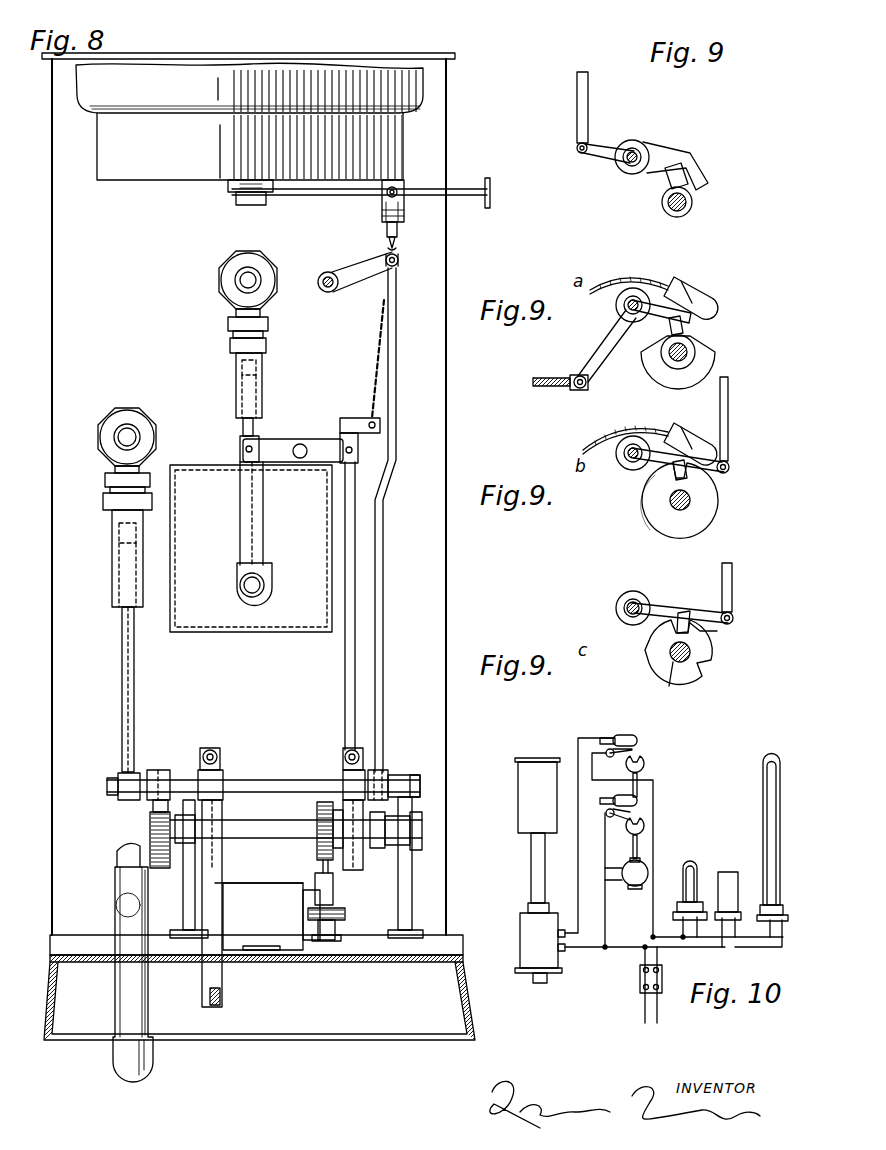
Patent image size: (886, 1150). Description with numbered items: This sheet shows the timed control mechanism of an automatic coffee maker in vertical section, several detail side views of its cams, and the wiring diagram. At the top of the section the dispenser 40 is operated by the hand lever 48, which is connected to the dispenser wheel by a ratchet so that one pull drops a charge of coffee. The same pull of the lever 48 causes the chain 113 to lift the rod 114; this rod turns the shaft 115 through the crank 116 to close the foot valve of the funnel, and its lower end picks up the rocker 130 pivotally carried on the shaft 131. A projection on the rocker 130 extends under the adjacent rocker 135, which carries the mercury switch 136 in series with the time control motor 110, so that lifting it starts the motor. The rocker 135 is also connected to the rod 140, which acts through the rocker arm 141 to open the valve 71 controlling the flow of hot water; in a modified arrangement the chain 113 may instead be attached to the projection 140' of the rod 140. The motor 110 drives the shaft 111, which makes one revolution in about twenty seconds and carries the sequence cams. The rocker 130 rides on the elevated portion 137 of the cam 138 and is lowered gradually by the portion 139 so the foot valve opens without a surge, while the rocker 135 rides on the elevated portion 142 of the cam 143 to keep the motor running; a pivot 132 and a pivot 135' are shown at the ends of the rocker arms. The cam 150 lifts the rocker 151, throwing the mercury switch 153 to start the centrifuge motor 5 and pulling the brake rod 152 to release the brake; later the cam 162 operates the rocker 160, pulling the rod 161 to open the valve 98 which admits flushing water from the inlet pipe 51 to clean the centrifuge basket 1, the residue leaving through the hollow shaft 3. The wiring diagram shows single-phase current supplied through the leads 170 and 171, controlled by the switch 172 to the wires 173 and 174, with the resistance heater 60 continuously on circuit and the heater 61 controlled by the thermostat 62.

In FIG. 10, the centrifuge basket 1 is at (537, 795).
In FIG. 10, the hollow shaft 3 is at (531, 878).
In FIG. 10, the centrifuge motor 5 is at (540, 948).
In FIG. 8, the dispenser 40 is at (80, 100).
In FIG. 8, the hand lever 48 is at (418, 191).
In FIG. 8, the water inlet pipe 51 is at (146, 1011).
In FIG. 10, the resistance heater 60 is at (681, 868).
In FIG. 10, the resistance heater 61 is at (763, 800).
In FIG. 10, the thermostat 62 is at (728, 871).
In FIG. 8, the valve 71 is at (228, 292).
In FIG. 8, the valve 98 is at (128, 408).
In FIG. 8, the time control motor 110 is at (267, 916).
In FIG. 9, the time control motor 110 is at (692, 206).
In FIG. 10, the time control motor 110 is at (632, 888).
In FIG. 9, the shaft 111 is at (672, 206).
In FIG. 9A, the shaft 111 is at (676, 358).
In FIG. 9B, the shaft 111 is at (675, 510).
In FIG. 9C, the shaft 111 is at (680, 685).
In FIG. 8, the chain 113 is at (388, 241).
In FIG. 8, the rod 114 is at (383, 353).
In FIG. 9C, the rod 114 is at (731, 573).
In FIG. 8, the shaft 115 is at (326, 273).
In FIG. 8, the crank 116 is at (355, 290).
In FIG. 8, the rocker 130 is at (380, 778).
In FIG. 9C, the rocker 130 is at (668, 604).
In FIG. 8, the shaft 131 is at (250, 785).
In FIG. 9, the shaft 131 is at (630, 160).
In FIG. 9A, the shaft 131 is at (628, 309).
In FIG. 9B, the shaft 131 is at (630, 466).
In FIG. 9C, the shaft 131 is at (630, 613).
In FIG. 9C, the pivot 132 is at (704, 631).
In FIG. 8, the rocker 135 is at (322, 777).
In FIG. 9B, the rocker 135 is at (709, 466).
In FIG. 10, the pivot 135' is at (660, 805).
In FIG. 8, the mercury switch 136 is at (350, 752).
In FIG. 9B, the mercury switch 136 is at (690, 416).
In FIG. 10, the mercury switch 136 is at (640, 799).
In FIG. 8, the elevated portion 137 is at (385, 811).
In FIG. 9C, the elevated portion 137 is at (645, 641).
In FIG. 8, the cam 138 is at (382, 850).
In FIG. 9C, the cam 138 is at (712, 670).
In FIG. 9C, the portion 139 is at (656, 670).
In FIG. 8, the rod 140 is at (321, 606).
In FIG. 9B, the rod 140 is at (748, 419).
In FIG. 8, the projection 140' is at (356, 429).
In FIG. 8, the rocker arm 141 is at (286, 444).
In FIG. 9B, the elevated portion 142 is at (646, 512).
In FIG. 8, the cam 143 is at (320, 881).
In FIG. 9B, the cam 143 is at (705, 515).
In FIG. 10, the cam 143 is at (645, 826).
In FIG. 8, the cam 150 is at (216, 876).
In FIG. 9A, the cam 150 is at (712, 358).
In FIG. 10, the cam 150 is at (645, 766).
In FIG. 8, the rocker 151 is at (200, 777).
In FIG. 9A, the rocker 151 is at (710, 296).
In FIG. 10, the rocker 151 is at (640, 751).
In FIG. 8, the brake rod 152 is at (218, 1010).
In FIG. 9A, the brake rod 152 is at (550, 379).
In FIG. 8, the mercury switch 153 is at (223, 731).
In FIG. 9A, the mercury switch 153 is at (676, 288).
In FIG. 10, the mercury switch 153 is at (620, 736).
In FIG. 9, the rocker 160 is at (656, 153).
In FIG. 8, the rod 161 is at (132, 691).
In FIG. 9, the rod 161 is at (588, 100).
In FIG. 8, the cam 162 is at (150, 826).
In FIG. 9, the cam 162 is at (706, 177).
In FIG. 10, the lead 170 is at (644, 1006).
In FIG. 10, the lead 171 is at (660, 1012).
In FIG. 10, the switch 172 is at (640, 986).
In FIG. 10, the wire 173 is at (614, 948).
In FIG. 10, the wire 174 is at (657, 925).